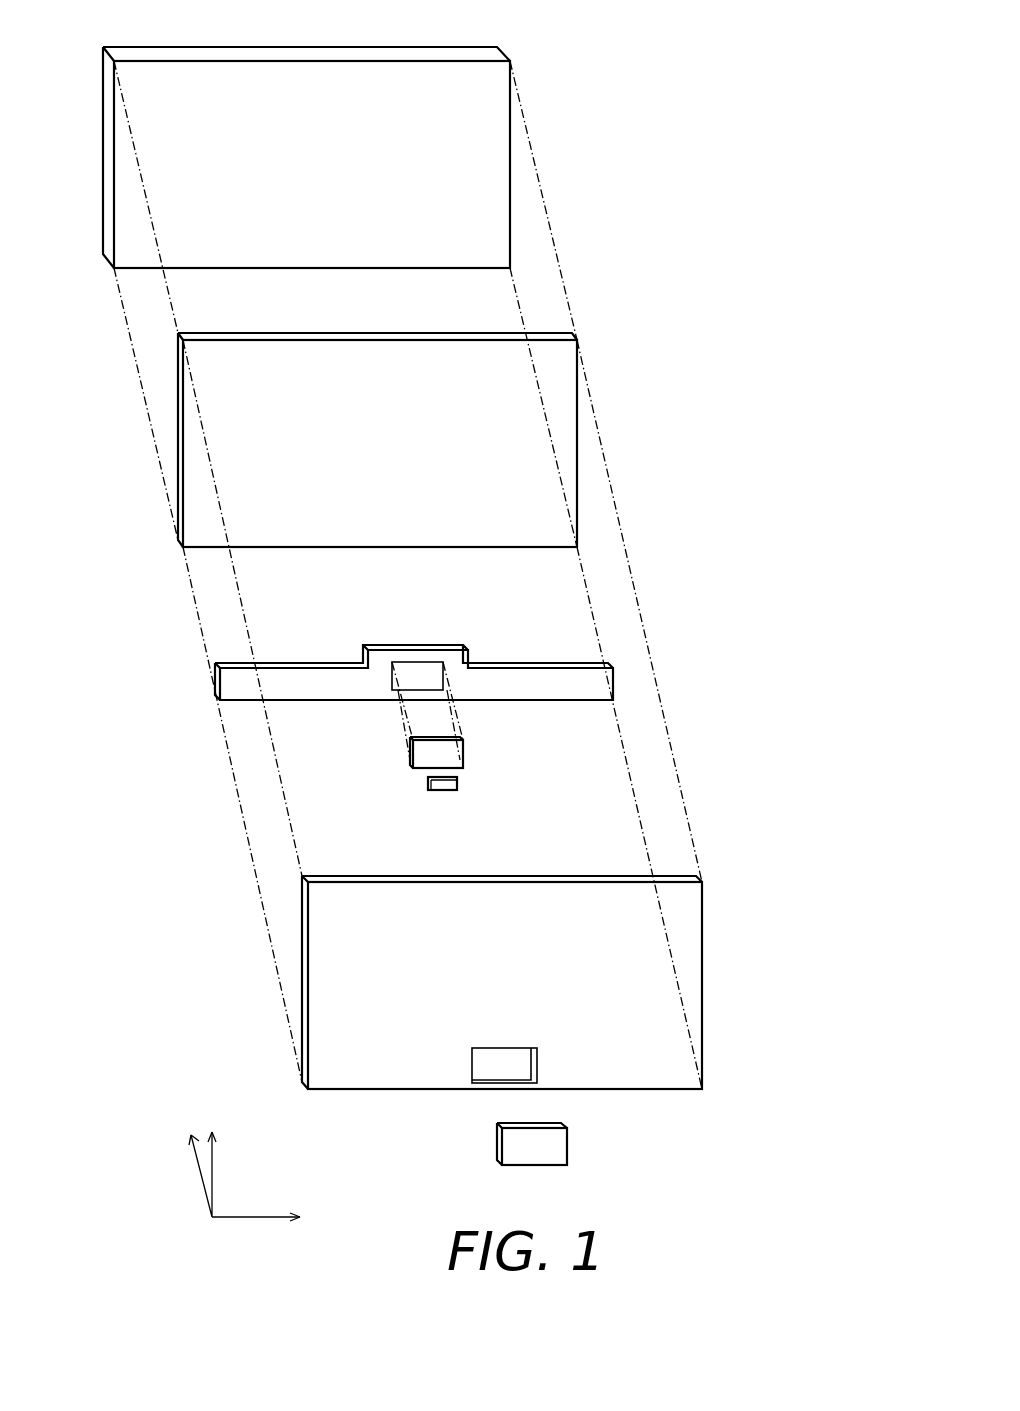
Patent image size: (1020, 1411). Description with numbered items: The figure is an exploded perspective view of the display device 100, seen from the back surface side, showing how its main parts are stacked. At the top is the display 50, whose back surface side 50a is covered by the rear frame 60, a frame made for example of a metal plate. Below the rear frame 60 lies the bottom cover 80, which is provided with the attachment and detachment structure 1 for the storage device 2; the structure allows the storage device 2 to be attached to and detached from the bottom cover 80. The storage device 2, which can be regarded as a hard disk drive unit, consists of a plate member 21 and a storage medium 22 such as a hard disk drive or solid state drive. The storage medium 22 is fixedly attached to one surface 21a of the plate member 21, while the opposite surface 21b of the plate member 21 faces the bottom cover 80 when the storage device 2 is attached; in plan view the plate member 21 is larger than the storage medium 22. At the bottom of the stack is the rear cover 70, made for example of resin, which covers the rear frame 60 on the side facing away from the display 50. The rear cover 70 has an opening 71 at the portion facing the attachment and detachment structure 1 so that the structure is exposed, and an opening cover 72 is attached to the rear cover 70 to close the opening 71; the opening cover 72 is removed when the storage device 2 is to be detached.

The display device 100 is at (658, 104).
The display 50 is at (497, 47).
The back surface side 50a is at (455, 205).
The rear frame 60 is at (577, 340).
The bottom cover 80 is at (613, 668).
The attachment and detachment structure 1 is at (443, 663).
The storage device 2 is at (555, 777).
The plate member 21 is at (463, 758).
The one surface 21a is at (452, 748).
The surface opposite to the one surface 21b is at (432, 737).
The storage medium 22 is at (457, 787).
The rear cover 70 is at (702, 882).
The opening 71 is at (516, 1070).
The opening cover 72 is at (567, 1160).